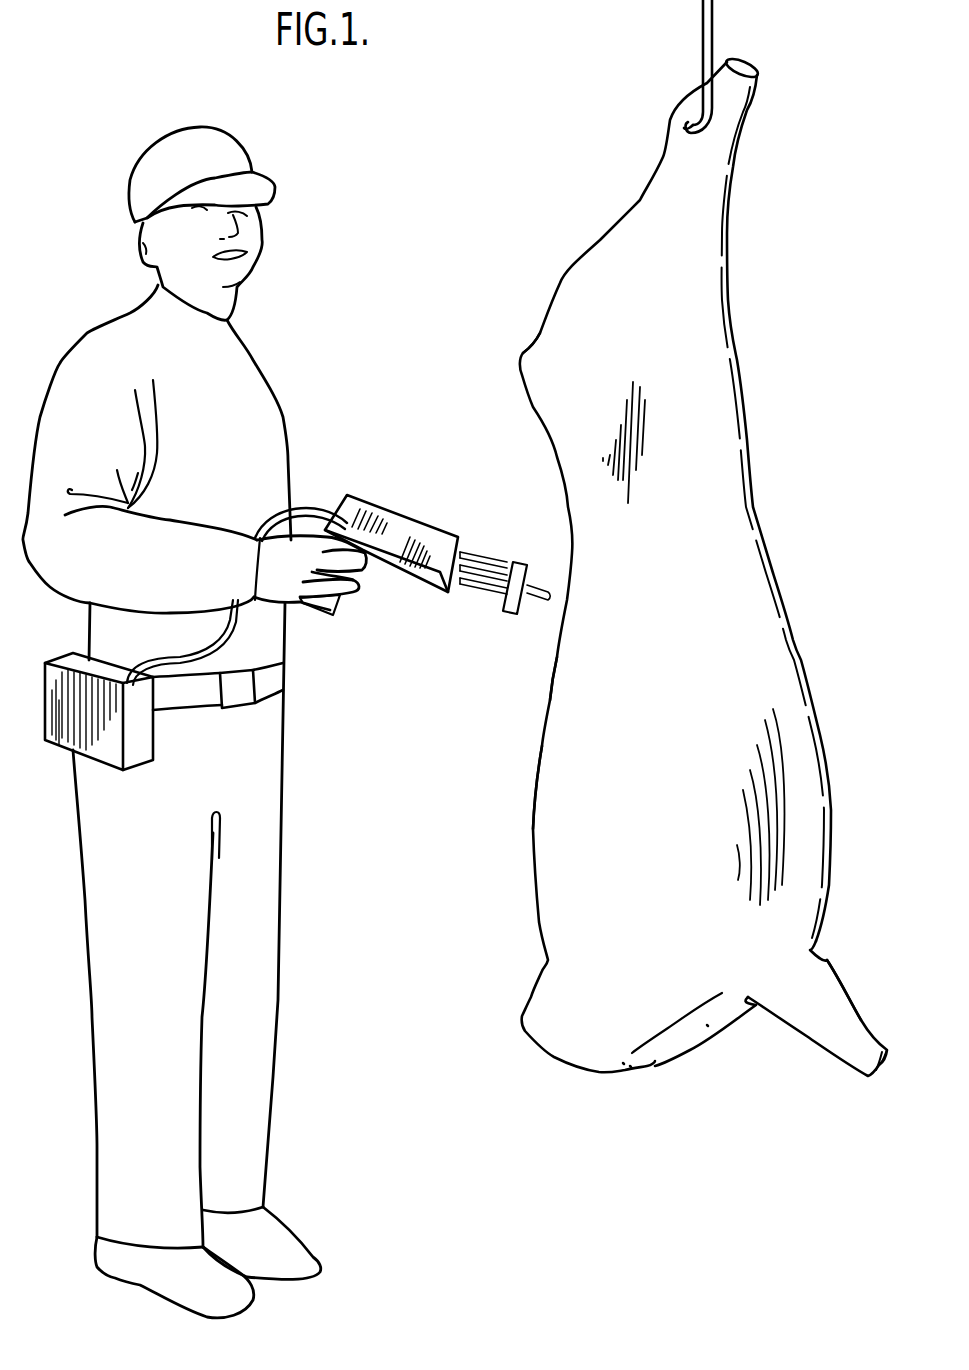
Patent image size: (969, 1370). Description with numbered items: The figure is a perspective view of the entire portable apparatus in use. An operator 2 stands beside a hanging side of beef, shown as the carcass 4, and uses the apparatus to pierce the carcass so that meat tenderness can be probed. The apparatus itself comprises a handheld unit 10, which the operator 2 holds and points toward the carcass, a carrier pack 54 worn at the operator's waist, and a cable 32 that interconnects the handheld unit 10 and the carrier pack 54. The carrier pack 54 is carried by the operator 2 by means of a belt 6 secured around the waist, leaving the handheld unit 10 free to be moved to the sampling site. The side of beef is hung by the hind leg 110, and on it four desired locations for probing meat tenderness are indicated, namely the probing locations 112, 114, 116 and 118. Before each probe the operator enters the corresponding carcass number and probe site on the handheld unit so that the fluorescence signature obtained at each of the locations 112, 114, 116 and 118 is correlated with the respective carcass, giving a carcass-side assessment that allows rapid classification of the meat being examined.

The operator 2 is at (243, 402).
The animal carcass 4 is at (743, 263).
The belt 6 is at (283, 678).
The handheld unit 10 is at (413, 512).
The cable 32 is at (315, 512).
The carrier pack 54 is at (50, 690).
The hind leg 110 is at (713, 127).
The probing location 112 is at (605, 680).
The probing location 114 is at (604, 733).
The probing location 116 is at (826, 1008).
The probing location 118 is at (572, 397).